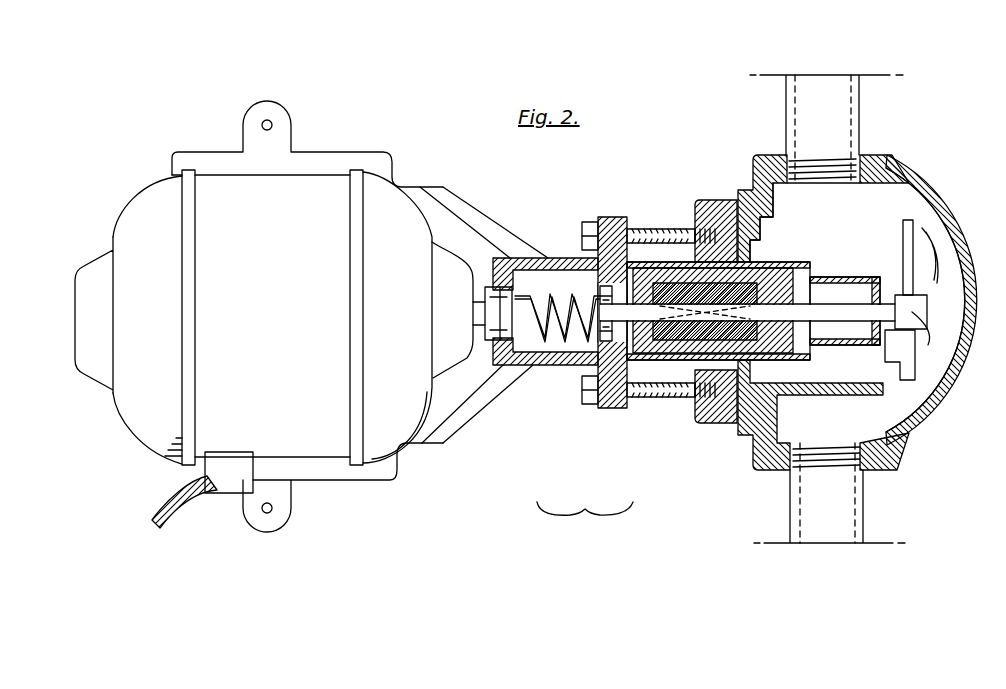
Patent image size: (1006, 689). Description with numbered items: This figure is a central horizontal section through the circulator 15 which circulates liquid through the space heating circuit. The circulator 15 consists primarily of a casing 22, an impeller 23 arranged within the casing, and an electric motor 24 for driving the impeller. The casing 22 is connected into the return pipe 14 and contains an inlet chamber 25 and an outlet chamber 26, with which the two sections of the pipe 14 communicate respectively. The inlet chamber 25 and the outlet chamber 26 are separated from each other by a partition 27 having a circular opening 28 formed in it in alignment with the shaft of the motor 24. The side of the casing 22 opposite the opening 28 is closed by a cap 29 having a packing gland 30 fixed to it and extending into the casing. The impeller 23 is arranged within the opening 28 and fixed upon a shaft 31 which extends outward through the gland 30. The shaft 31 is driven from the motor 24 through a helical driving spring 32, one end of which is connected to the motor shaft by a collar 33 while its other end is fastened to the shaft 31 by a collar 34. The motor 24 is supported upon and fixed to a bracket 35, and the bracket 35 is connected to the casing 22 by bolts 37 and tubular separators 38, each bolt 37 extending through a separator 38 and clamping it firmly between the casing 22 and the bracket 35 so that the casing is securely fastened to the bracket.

The return pipe 14 is at (827, 309).
The circulator 15 is at (585, 524).
The casing 22 is at (917, 423).
The impeller 23 is at (903, 359).
The electric motor 24 is at (280, 316).
The inlet chamber 25 is at (907, 398).
The outlet chamber 26 is at (880, 213).
The partition 27 is at (923, 237).
The circular opening 28 is at (903, 243).
The cap 29 is at (710, 428).
The packing gland 30 is at (838, 330).
The shaft 31 is at (765, 312).
The helical driving spring 32 is at (548, 350).
The collar 33 is at (480, 262).
The collar 34 is at (612, 310).
The bracket 35 is at (477, 213).
The bolts 37 is at (587, 222).
The tubular separators 38 is at (645, 222).